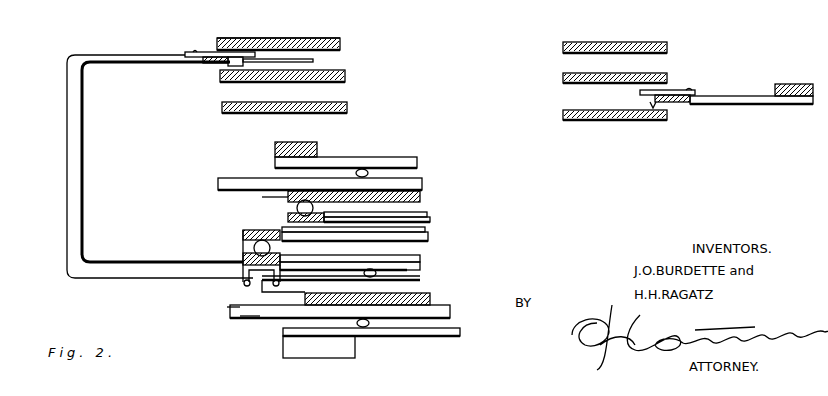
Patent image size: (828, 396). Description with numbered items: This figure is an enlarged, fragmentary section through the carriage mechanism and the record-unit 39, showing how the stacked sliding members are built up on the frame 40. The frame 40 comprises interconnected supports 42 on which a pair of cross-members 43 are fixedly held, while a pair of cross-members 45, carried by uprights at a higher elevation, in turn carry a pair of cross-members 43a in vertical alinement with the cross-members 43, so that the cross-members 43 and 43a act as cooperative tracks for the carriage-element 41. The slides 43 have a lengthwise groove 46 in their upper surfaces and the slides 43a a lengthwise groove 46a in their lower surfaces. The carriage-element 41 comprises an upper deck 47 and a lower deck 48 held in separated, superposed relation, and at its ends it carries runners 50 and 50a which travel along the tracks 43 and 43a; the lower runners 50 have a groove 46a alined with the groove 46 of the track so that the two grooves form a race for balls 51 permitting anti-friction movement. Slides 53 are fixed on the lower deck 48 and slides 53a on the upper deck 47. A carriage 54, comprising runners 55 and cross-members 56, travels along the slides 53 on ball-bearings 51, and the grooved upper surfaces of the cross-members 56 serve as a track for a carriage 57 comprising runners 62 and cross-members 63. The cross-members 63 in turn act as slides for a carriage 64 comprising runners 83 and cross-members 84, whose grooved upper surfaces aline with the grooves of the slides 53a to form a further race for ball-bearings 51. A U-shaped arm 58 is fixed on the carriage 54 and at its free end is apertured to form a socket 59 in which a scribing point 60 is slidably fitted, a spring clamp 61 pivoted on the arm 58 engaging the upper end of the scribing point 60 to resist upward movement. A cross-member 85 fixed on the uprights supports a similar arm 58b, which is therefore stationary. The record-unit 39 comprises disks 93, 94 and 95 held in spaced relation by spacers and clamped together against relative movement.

The record-unit 39 is at (283, 38).
The frame 40 is at (230, 312).
The carriage-element 41 is at (227, 308).
The supports 42 is at (319, 347).
The cross-members 43 is at (283, 331).
The cross-members 43a is at (275, 160).
The cross-members 45 is at (278, 143).
The groove 46 is at (245, 273).
The groove 46a is at (243, 233).
The upper deck 47 is at (422, 197).
The lower deck 48 is at (432, 299).
The runners 50 is at (240, 316).
The runners 50a is at (218, 183).
The balls 51 is at (368, 170).
The slides 53 is at (412, 284).
The slides 53a is at (262, 197).
The carriage 54 is at (421, 258).
The runners 55 is at (421, 268).
The cross-members 56 is at (243, 257).
The carriage 57 is at (426, 236).
The U-shaped arm 58 is at (108, 161).
The arm 58b is at (730, 97).
The socket 59 is at (212, 63).
The scribing point 60 is at (314, 61).
The spring clamp 61 is at (207, 52).
The runners 62 is at (245, 239).
The cross-members 63 is at (430, 242).
The carriage 64 is at (428, 215).
The runners 83 is at (432, 221).
The cross-members 84 is at (290, 216).
The cross-member 85 is at (790, 84).
The disk 93 is at (467, 33).
The disk 94 is at (347, 77).
The disk 95 is at (350, 108).